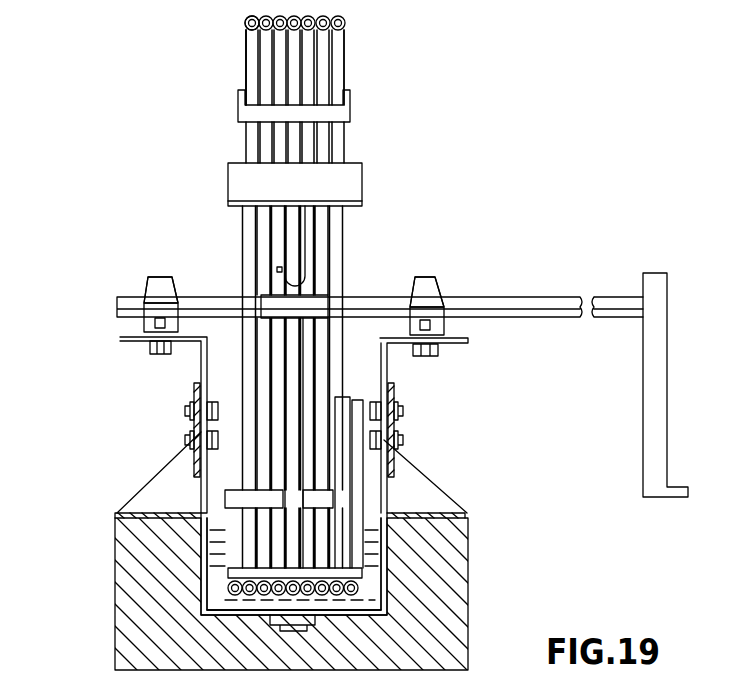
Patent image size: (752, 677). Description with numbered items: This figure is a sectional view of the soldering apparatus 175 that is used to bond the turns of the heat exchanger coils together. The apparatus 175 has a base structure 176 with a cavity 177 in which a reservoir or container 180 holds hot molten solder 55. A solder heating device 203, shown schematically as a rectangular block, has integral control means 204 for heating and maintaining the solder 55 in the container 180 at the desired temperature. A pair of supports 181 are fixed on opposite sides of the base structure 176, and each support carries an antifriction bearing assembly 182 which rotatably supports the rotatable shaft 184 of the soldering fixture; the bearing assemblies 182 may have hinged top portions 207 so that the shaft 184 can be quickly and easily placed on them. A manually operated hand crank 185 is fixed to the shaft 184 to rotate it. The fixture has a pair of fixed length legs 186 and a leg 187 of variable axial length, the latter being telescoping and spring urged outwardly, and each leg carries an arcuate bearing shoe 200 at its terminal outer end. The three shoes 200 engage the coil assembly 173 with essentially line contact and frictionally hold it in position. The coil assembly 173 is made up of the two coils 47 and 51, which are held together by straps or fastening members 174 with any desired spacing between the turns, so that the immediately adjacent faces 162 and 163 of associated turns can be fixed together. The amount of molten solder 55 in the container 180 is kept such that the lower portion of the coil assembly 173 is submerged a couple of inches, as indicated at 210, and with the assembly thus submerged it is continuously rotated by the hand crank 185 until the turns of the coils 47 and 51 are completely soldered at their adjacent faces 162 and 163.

The coil 47 is at (245, 24).
The coil 51 is at (267, 25).
The solder 55 is at (375, 598).
The face 162 is at (265, 0).
The face 163 is at (250, 30).
The coil assembly 173 is at (238, 72).
The fastening member 174 is at (350, 107).
The soldering apparatus 175 is at (575, 180).
The base structure 176 is at (125, 580).
The cavity 177 is at (203, 590).
The container 180 is at (205, 515).
The support 181 is at (185, 430).
The antifriction bearing assembly 182 is at (162, 276).
The rotatable shaft 184 is at (488, 300).
The hand crank 185 is at (660, 363).
The fixed length leg 186 is at (290, 366).
The variable length leg 187 is at (302, 242).
The arcuate bearing shoe 200 is at (356, 182).
The solder heating device 203 is at (268, 618).
The control means 204 is at (302, 631).
The hinged top portion 207 is at (147, 288).
The submerged portion 210 is at (380, 556).